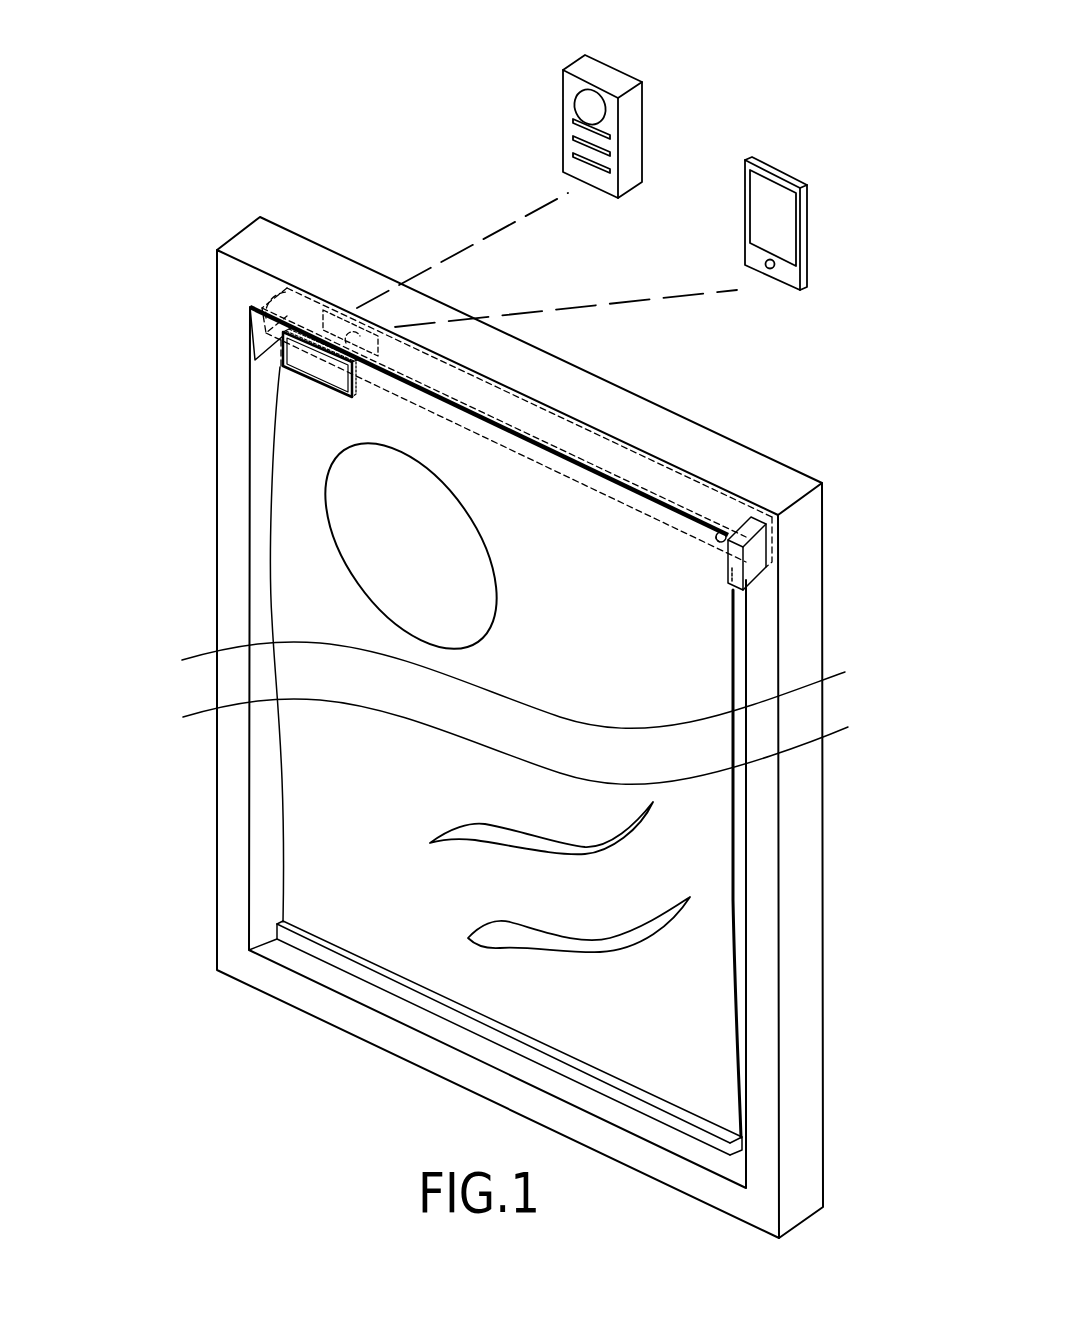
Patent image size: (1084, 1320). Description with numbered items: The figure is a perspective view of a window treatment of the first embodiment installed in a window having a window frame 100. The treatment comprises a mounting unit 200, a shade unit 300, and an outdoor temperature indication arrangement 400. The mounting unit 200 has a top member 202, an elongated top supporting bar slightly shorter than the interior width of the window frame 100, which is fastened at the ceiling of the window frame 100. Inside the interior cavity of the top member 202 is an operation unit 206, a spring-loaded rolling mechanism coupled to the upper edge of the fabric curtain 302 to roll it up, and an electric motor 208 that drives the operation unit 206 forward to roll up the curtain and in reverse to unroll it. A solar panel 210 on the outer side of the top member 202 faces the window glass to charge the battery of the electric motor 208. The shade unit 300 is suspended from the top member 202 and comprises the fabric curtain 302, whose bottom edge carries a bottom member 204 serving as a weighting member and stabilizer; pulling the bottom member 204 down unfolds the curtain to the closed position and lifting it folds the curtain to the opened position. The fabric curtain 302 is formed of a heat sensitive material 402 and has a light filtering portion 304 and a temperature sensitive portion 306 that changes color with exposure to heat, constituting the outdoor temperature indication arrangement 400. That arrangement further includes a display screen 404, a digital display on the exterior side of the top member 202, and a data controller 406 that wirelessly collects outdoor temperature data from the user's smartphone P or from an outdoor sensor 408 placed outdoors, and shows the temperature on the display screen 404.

The window frame 100 is at (803, 560).
The mounting unit 200 is at (557, 637).
The top member 202 is at (717, 503).
The bottom member 204 is at (358, 968).
The operation unit 206 is at (623, 470).
The electric motor 208 is at (758, 553).
The solar panel 210 is at (335, 326).
The shade unit 300 is at (461, 752).
The fabric curtain 302 is at (337, 822).
The light filtering portion 304 is at (633, 629).
The temperature sensitive portion 306 is at (439, 595).
The outdoor temperature indication arrangement 400 is at (500, 548).
The heat sensitive material 402 is at (362, 538).
The display screen 404 is at (312, 367).
The data controller 406 is at (313, 335).
The outdoor sensor 408 is at (630, 123).
The smartphone P is at (805, 218).